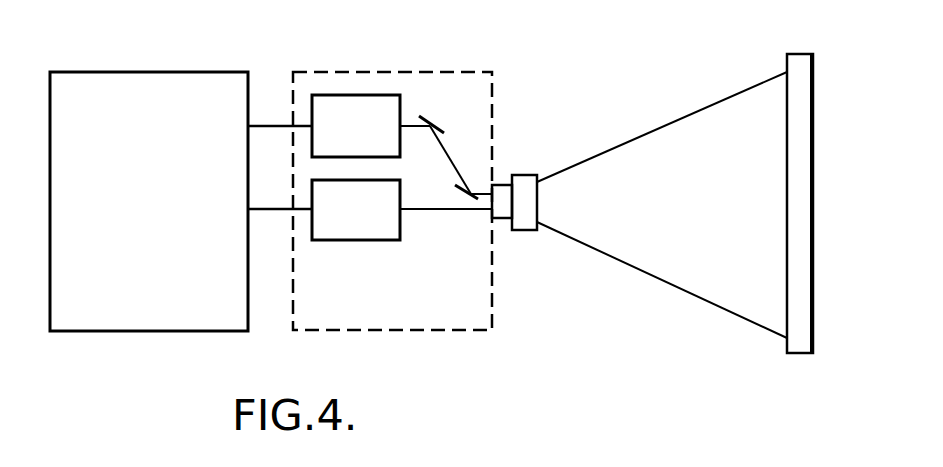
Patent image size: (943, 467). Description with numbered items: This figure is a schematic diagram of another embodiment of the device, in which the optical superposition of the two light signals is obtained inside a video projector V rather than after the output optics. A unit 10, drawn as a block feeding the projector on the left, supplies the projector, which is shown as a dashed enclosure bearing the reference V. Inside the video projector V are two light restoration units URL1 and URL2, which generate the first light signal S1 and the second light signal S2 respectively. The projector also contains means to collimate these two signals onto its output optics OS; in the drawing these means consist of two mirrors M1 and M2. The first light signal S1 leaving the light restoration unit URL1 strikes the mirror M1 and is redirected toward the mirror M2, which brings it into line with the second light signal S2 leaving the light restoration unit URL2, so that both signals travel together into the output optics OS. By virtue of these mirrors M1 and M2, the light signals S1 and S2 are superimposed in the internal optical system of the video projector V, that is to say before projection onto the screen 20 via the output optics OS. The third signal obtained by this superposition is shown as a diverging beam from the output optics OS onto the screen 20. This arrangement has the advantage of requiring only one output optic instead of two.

The signal source / control unit 10 is at (151, 90).
The video projector V is at (383, 332).
The light restoration unit URL1 is at (350, 108).
The light restoration unit URL2 is at (330, 228).
The first light signal S1 is at (413, 118).
The second light signal S2 is at (443, 213).
The mirror M1 is at (441, 128).
The mirror M2 is at (456, 188).
The output optics OS is at (523, 212).
The screen 20 is at (797, 322).